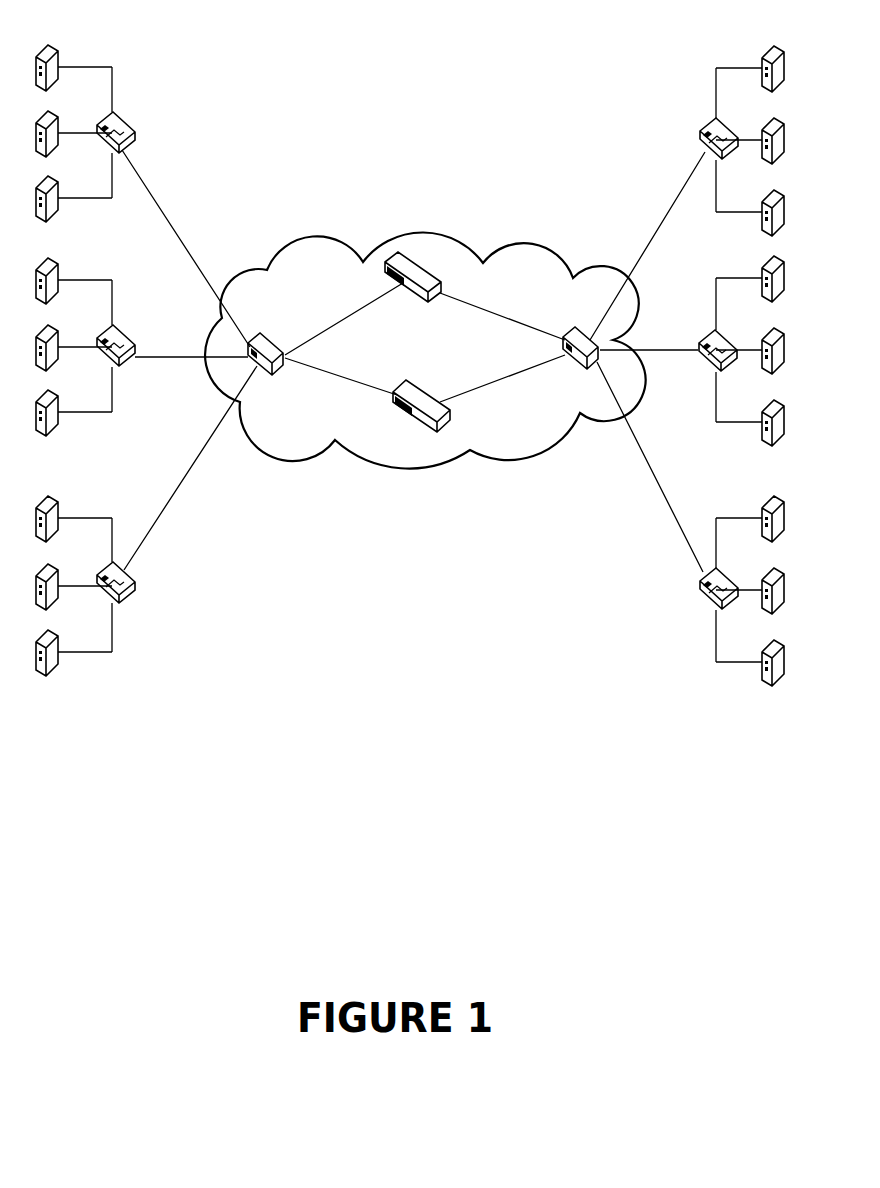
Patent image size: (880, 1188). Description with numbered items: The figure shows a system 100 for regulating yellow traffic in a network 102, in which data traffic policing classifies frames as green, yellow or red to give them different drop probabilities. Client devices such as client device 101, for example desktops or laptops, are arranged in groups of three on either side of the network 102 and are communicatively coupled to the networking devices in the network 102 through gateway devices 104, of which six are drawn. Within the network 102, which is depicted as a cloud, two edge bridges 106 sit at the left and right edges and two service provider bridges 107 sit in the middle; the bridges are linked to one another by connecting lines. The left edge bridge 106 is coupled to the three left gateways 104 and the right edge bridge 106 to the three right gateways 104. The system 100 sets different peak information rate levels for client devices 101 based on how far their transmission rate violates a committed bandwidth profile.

The system 100 is at (611, 729).
The client device 101 is at (43, 677).
The network 102 is at (420, 472).
The gateway device 104 is at (135, 130).
The edge bridge 106 is at (590, 333).
The service provider bridge 107 is at (372, 482).